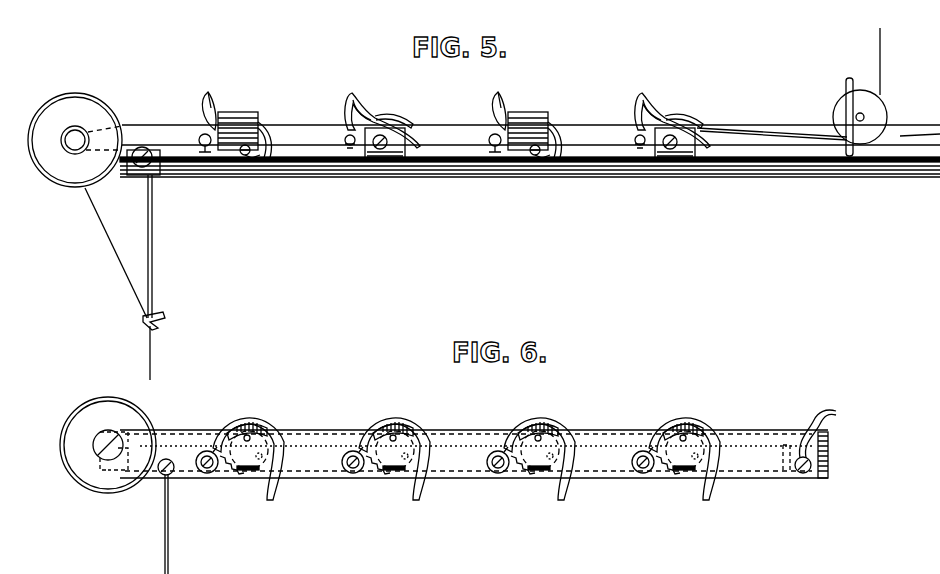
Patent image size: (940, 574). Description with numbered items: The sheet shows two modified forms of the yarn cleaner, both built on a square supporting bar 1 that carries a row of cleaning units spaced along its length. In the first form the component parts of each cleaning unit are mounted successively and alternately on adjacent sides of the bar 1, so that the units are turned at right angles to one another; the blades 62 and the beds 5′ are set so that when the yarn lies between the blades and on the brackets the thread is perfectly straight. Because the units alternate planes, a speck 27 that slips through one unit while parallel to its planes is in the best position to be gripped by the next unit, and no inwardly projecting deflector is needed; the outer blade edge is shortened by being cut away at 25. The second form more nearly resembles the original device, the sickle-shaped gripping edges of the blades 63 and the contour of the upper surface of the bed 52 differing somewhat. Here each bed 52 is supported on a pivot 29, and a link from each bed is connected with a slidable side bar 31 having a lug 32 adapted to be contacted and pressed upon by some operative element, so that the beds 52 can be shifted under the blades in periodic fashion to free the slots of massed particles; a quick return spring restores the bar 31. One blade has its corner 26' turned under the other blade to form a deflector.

In FIG. 5, the supporting bar 1 is at (924, 142).
In FIG. 5, the cut away portion 25 is at (297, 127).
In FIG. 5, the speck 27 is at (160, 126).
In FIG. 5, the blades 62 is at (212, 98).
In FIG. 5, the beds 5′ is at (244, 118).
In FIG. 6, the bed 52 is at (530, 428).
In FIG. 6, the pivot 29 is at (252, 438).
In FIG. 6, the blade 63 is at (276, 486).
In FIG. 6, the corner 26' is at (520, 402).
In FIG. 6, the slidable side bar 31 is at (468, 476).
In FIG. 6, the lug 32 is at (788, 476).